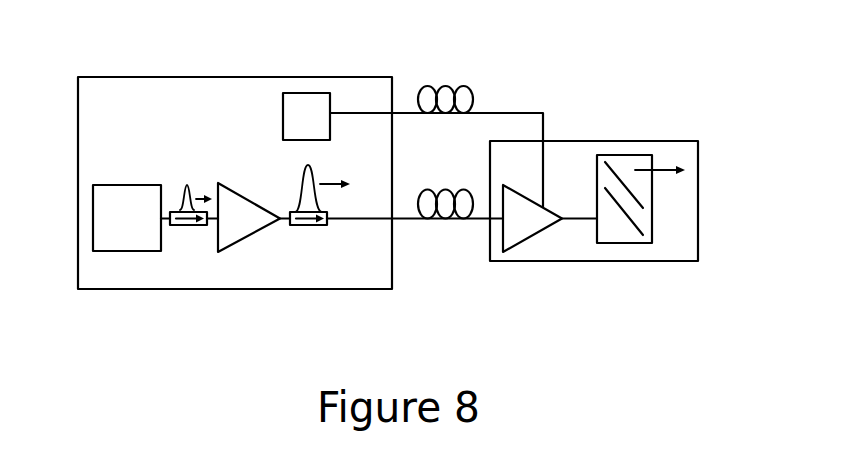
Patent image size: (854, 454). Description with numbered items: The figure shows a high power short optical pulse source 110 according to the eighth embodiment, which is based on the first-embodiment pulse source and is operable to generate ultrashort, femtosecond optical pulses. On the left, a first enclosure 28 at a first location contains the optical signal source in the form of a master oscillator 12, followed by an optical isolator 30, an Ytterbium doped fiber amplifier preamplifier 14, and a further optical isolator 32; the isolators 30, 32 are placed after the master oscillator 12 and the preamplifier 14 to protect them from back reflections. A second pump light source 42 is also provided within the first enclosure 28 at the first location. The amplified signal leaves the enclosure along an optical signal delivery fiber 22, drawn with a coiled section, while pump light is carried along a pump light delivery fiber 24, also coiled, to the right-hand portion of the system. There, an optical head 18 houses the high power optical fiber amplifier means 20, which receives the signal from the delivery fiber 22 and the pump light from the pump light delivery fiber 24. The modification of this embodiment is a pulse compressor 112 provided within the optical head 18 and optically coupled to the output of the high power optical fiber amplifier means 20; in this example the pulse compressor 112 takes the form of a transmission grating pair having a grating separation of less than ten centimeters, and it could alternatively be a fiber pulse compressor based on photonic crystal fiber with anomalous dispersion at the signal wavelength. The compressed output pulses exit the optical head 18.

The high power short optical pulse source 110 is at (157, 311).
The first enclosure 28 is at (272, 289).
The master oscillator 12 is at (122, 216).
The optical isolator 30 is at (186, 226).
The preamplifier 14 is at (237, 223).
The optical isolator 32 is at (305, 226).
The optical signal delivery fiber 22 is at (410, 222).
The second pump light source 42 is at (296, 117).
The pump light delivery fiber 24 is at (500, 113).
The optical head 18 is at (665, 262).
The high power optical fiber amplifier means 20 is at (523, 220).
The pulse compressor 112 is at (627, 161).